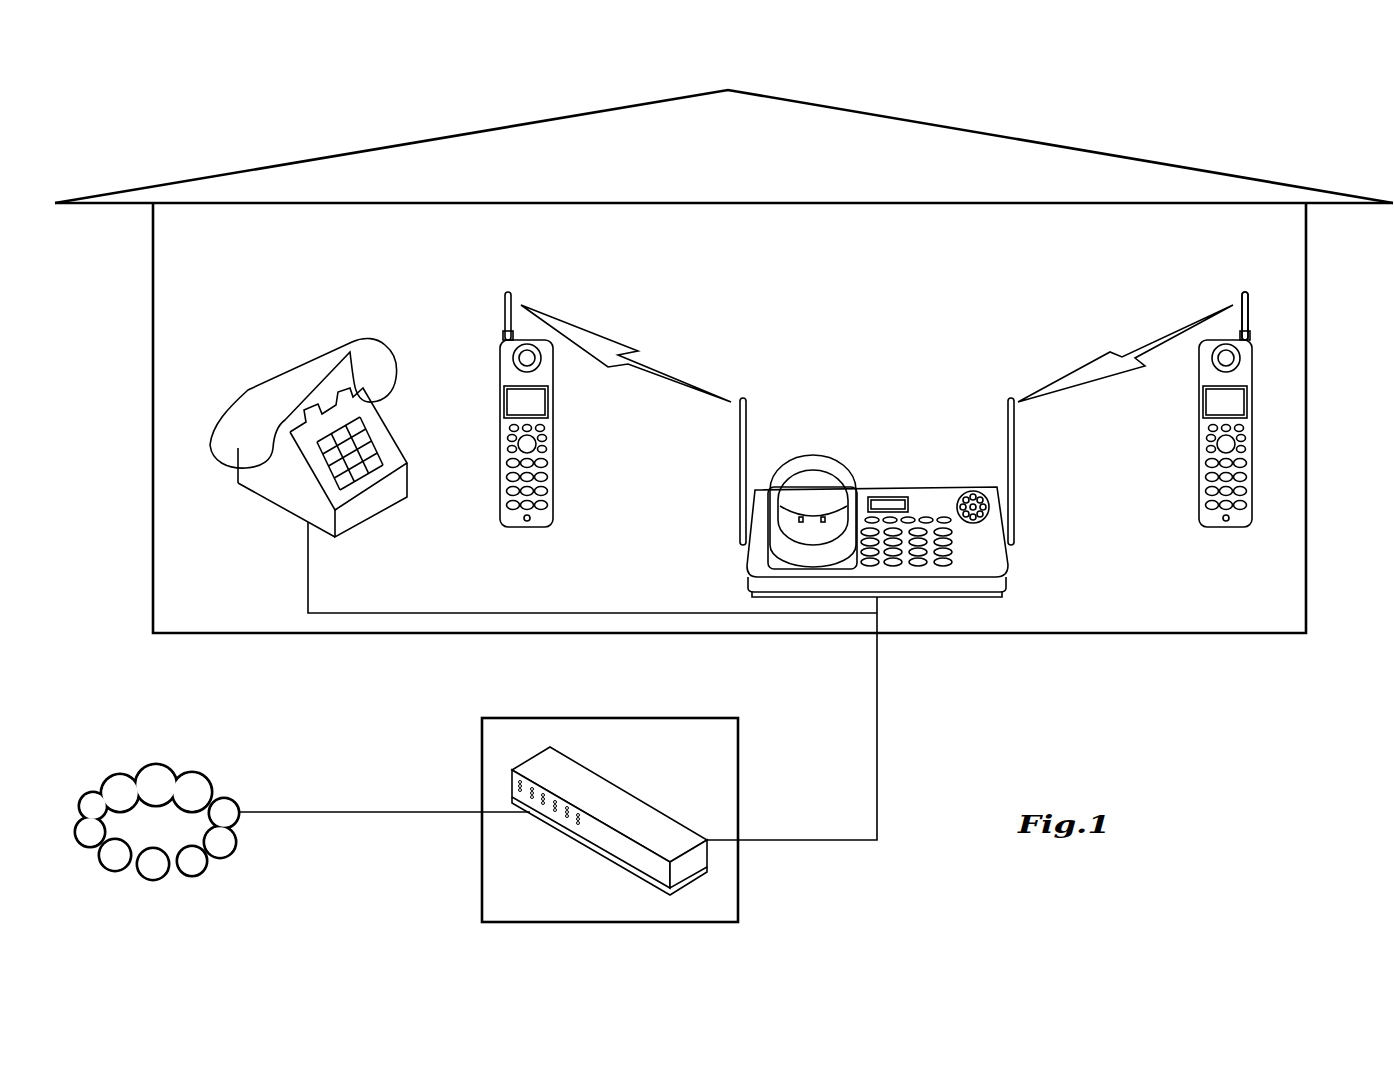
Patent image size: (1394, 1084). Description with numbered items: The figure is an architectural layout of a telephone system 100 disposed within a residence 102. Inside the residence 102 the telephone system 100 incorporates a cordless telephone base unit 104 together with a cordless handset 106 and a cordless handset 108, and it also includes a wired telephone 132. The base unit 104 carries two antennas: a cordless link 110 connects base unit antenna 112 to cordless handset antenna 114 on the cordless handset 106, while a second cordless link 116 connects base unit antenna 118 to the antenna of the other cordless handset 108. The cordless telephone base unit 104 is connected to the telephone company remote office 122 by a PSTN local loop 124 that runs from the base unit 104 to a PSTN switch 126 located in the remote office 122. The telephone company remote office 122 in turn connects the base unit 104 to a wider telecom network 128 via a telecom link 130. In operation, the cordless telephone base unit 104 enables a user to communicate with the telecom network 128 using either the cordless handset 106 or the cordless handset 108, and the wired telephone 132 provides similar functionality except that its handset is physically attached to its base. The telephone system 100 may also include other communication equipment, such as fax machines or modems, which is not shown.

The telephone system 100 is at (1194, 124).
The residence 102 is at (362, 150).
The cordless telephone base unit 104 is at (905, 487).
The cordless handset 106 is at (1200, 468).
The cordless handset 108 is at (556, 466).
The cordless link 110 is at (1143, 340).
The base unit antenna 112 is at (1012, 396).
The cordless handset antenna 114 is at (1246, 290).
The cordless link 116 is at (606, 336).
The base unit antenna 118 is at (740, 396).
The telephone company remote office 122 is at (536, 717).
The PSTN local loop 124 is at (810, 838).
The PSTN switch 126 is at (640, 800).
The telecom network 128 is at (212, 772).
The telecom link 130 is at (358, 810).
The wired telephone 132 is at (310, 358).